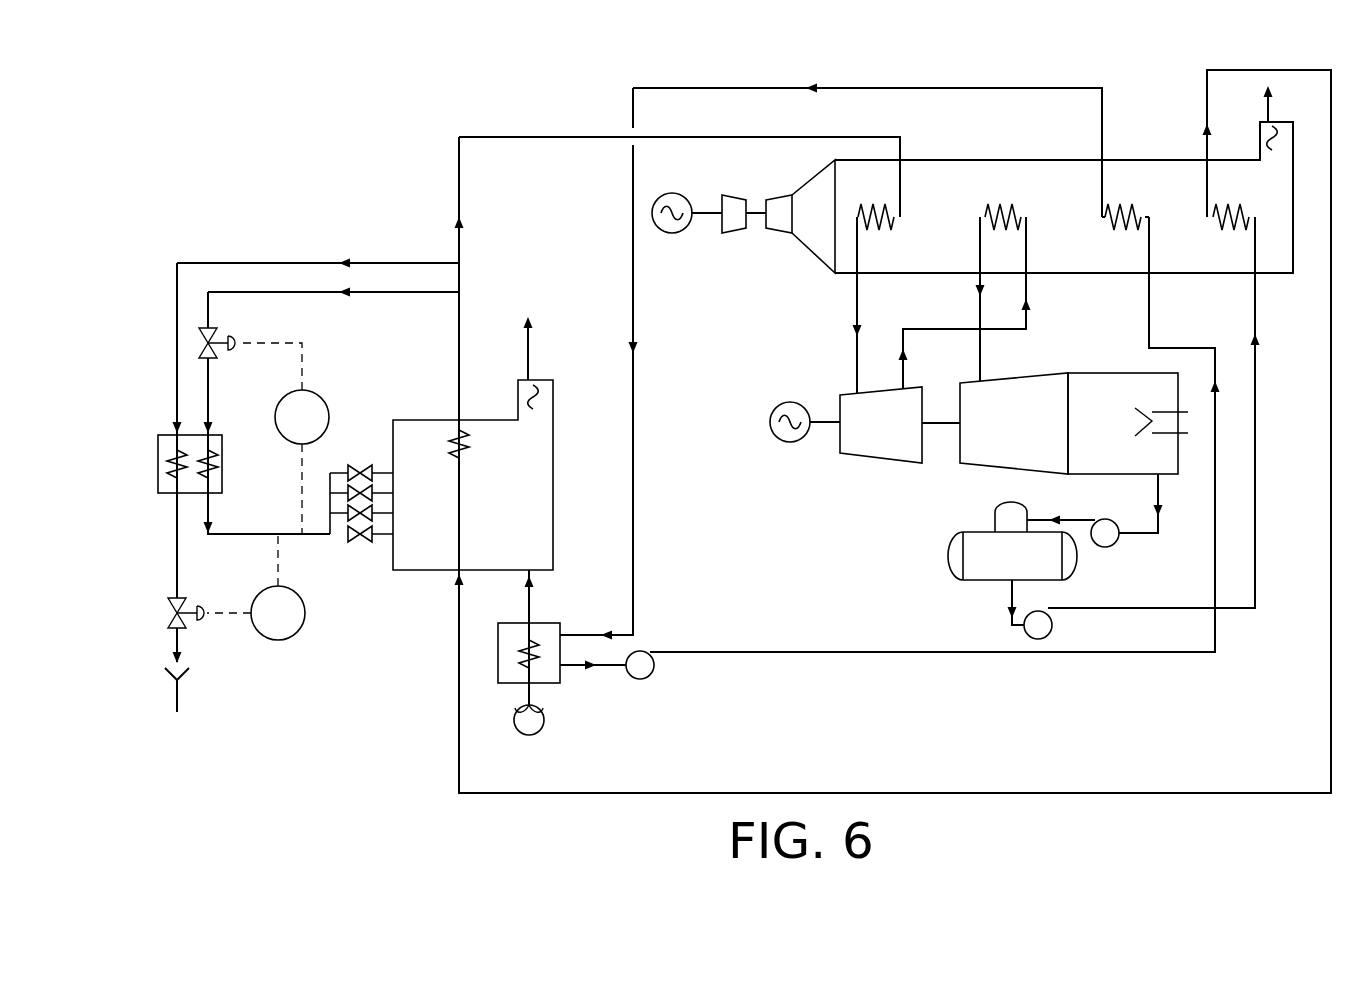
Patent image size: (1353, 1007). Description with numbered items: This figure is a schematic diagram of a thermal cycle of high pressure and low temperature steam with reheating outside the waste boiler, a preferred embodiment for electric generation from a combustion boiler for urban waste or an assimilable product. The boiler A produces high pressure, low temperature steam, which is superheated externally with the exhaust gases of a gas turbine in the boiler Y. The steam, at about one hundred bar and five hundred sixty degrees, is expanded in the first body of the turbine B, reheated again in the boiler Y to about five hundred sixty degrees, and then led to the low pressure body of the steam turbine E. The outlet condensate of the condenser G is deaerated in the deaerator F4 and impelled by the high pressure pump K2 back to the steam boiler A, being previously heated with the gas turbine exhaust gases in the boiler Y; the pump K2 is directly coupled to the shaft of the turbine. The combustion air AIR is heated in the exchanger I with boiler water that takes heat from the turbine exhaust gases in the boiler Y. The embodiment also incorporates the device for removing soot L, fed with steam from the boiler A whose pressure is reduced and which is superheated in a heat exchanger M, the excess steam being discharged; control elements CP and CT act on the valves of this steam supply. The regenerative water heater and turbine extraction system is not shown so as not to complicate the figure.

The heat exchanger M is at (178, 464).
The device for removing soot L is at (361, 492).
The boiler A is at (473, 475).
The exchanger I is at (521, 653).
The pressure controller CP is at (283, 438).
The temperature controller CT is at (256, 587).
The air inlet AIR is at (525, 735).
The first body of the turbine B is at (881, 425).
The low pressure body of the steam turbine E is at (1014, 423).
The condenser G is at (1128, 423).
The boiler Y is at (1100, 218).
The high pressure pump K2 is at (1058, 626).
The deaerator F4 is at (1012, 541).